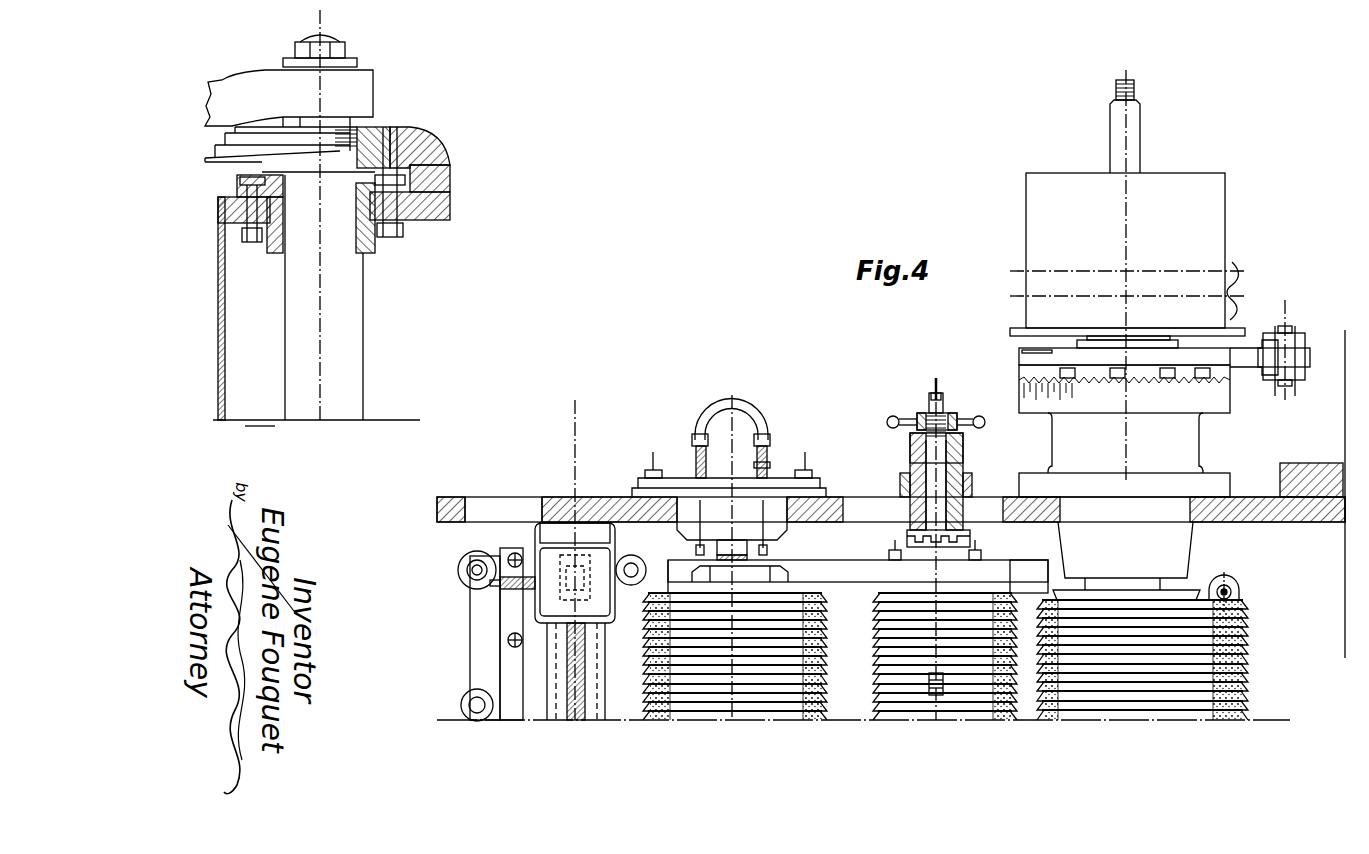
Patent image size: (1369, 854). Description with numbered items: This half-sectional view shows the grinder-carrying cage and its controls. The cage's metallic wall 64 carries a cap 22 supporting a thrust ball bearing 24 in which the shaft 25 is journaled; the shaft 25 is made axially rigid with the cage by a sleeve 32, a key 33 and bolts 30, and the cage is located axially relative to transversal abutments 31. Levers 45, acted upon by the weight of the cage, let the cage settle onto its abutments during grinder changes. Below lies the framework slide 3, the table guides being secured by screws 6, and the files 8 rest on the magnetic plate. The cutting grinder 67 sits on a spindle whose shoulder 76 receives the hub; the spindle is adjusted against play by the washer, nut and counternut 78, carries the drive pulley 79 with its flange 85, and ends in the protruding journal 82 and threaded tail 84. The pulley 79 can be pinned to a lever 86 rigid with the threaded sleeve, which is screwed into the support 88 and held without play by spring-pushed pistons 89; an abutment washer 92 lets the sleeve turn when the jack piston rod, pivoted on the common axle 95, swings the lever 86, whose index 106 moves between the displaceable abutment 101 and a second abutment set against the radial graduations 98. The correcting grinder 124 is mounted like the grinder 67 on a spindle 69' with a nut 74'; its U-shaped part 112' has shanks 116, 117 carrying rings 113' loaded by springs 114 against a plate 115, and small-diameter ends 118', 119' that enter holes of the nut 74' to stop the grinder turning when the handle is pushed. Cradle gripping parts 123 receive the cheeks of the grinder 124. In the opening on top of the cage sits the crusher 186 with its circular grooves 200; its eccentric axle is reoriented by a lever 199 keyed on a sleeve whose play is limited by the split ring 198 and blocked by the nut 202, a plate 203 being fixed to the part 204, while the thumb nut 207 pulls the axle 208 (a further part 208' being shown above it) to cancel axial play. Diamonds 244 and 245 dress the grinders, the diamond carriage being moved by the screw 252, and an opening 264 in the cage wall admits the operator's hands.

The lever 45 is at (262, 88).
The thrust ball bearing 24 is at (387, 157).
The cap 22 is at (425, 152).
The bolt 30 is at (245, 172).
The metallic wall 64 is at (440, 208).
The sleeve 32 is at (273, 253).
The key 33 is at (374, 244).
The shaft 25 is at (285, 347).
The opening 264 is at (472, 507).
The screw 252 is at (567, 680).
The U-shaped part 112' is at (731, 393).
The ring 113' is at (724, 409).
The shank 117 is at (697, 448).
The plate 115 is at (686, 486).
The spring 114 is at (770, 448).
The shank 116 is at (770, 465).
The spindle 69' is at (732, 528).
The small-diameter portion 119' is at (672, 527).
The gripping part 123 is at (686, 590).
The small-diameter portion 118' is at (804, 527).
The nut 74' is at (846, 576).
The diamond 244 is at (648, 627).
The correcting grinder 124 is at (772, 690).
The crusher 186 is at (905, 658).
The circular groove 200 is at (928, 686).
The thumb nut 207 is at (896, 416).
The pin 208' is at (920, 377).
The axle 208 is at (954, 384).
The nut 202 is at (917, 437).
The split ring 198 is at (912, 462).
The lever 199 is at (966, 452).
The plate 203 is at (903, 482).
The part 204 is at (972, 484).
The file 8 is at (939, 448).
The radial graduation 98 is at (1032, 383).
The displaceable abutment 101 is at (1030, 364).
The index 106 is at (1022, 352).
The flange 85 is at (1014, 328).
The washer, nut and counternut 78 is at (1150, 336).
The drive pulley 79 is at (1206, 196).
The journal 82 is at (1141, 140).
The threaded tail 84 is at (1136, 92).
The abutment washer 92 is at (1246, 342).
The common axle 95 is at (1300, 331).
The lever 86 is at (1246, 368).
The piston 89 is at (1120, 385).
The screw 6 is at (1126, 440).
The support 88 is at (1066, 497).
The transversal abutment 31 is at (1310, 470).
The shoulder 76 is at (1165, 588).
The diamond 245 is at (1242, 592).
The cutting grinder 67 is at (1185, 665).
The slide 3 is at (446, 720).